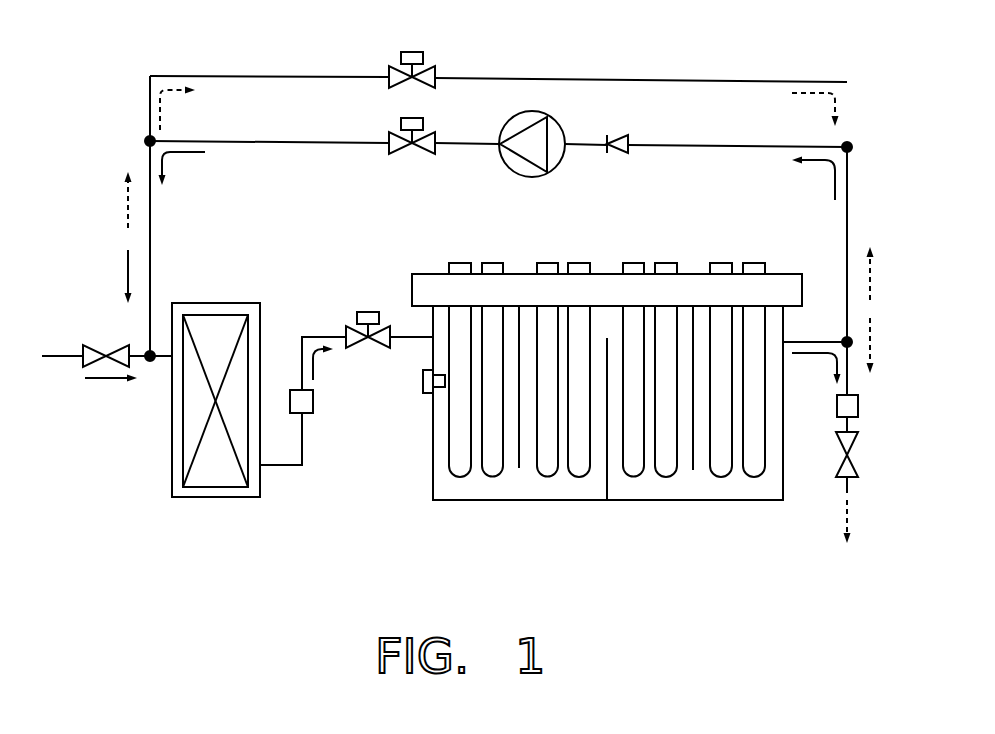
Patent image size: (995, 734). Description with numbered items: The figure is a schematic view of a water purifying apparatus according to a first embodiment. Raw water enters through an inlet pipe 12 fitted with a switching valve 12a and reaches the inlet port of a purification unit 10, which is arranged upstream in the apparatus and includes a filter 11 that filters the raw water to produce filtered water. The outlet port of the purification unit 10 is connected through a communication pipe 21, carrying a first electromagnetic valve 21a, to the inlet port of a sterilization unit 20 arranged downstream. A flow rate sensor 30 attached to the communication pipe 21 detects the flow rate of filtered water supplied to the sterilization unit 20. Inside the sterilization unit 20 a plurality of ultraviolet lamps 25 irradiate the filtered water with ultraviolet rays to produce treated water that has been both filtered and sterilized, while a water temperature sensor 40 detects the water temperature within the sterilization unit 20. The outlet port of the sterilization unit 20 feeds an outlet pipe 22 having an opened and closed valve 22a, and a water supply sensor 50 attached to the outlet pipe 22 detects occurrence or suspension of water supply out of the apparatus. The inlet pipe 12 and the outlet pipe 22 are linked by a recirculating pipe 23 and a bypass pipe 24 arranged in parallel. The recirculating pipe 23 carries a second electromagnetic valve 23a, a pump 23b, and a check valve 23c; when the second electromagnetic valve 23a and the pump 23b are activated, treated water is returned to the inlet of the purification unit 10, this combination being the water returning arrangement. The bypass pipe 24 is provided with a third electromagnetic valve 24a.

The purification unit 10 is at (237, 498).
The filter 11 is at (205, 476).
The inlet pipe 12 is at (60, 358).
The switching valve 12a is at (98, 345).
The sterilization unit 20 is at (455, 505).
The communication pipe 21 is at (398, 330).
The first electromagnetic valve 21a is at (345, 328).
The outlet pipe 22 is at (828, 340).
The opened and closed valve 22a is at (858, 462).
The recirculating pipe 23 is at (683, 150).
The second electromagnetic valve 23a is at (423, 152).
The pump 23b is at (530, 178).
The check valve 23c is at (617, 157).
The bypass pipe 24 is at (683, 80).
The third electromagnetic valve 24a is at (384, 72).
The ultraviolet lamps 25 is at (747, 471).
The flow rate sensor 30 is at (313, 400).
The water temperature sensor 40 is at (422, 381).
The water supply sensor 50 is at (858, 405).